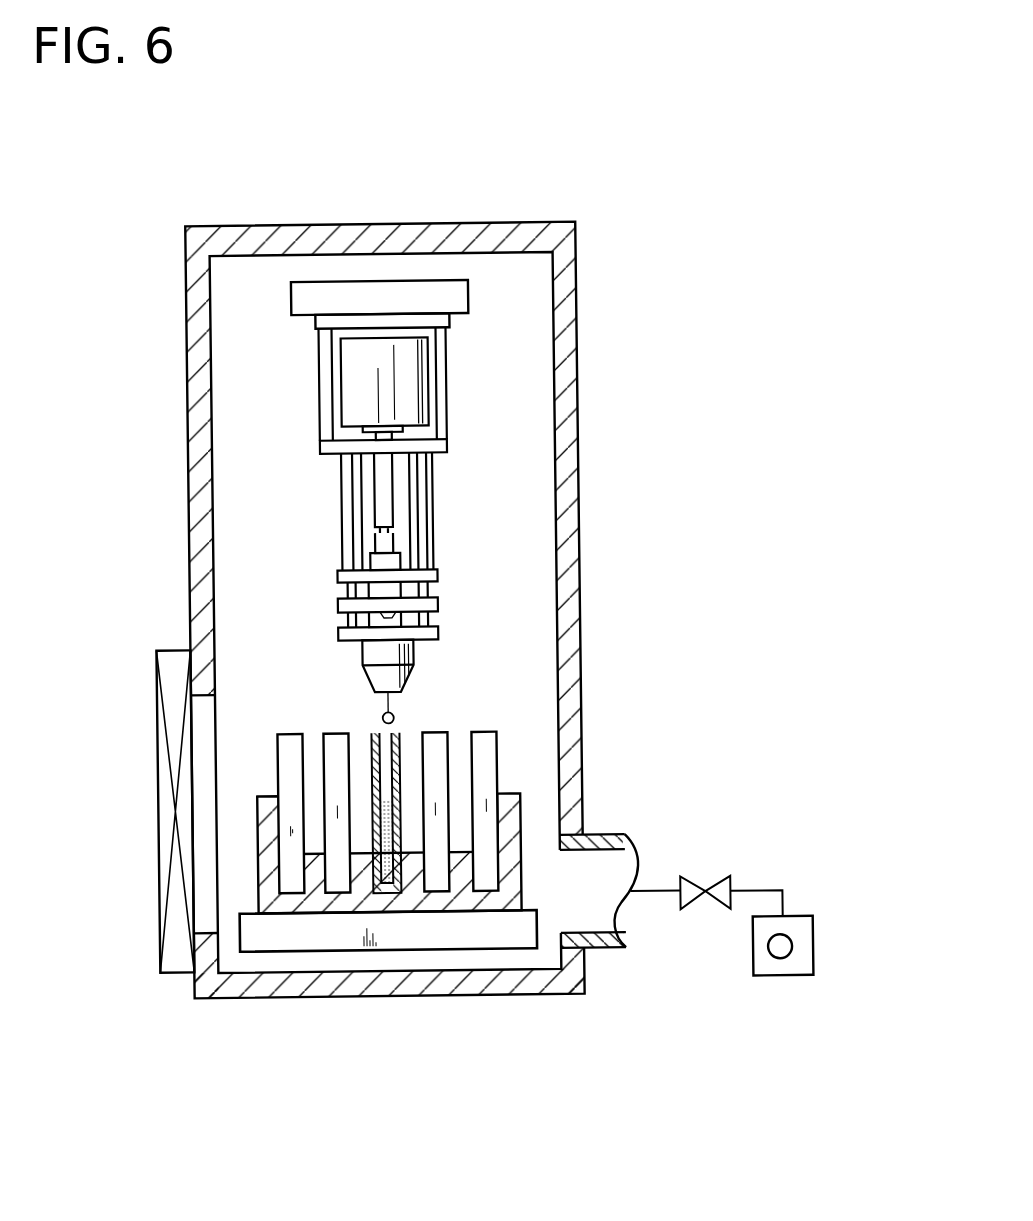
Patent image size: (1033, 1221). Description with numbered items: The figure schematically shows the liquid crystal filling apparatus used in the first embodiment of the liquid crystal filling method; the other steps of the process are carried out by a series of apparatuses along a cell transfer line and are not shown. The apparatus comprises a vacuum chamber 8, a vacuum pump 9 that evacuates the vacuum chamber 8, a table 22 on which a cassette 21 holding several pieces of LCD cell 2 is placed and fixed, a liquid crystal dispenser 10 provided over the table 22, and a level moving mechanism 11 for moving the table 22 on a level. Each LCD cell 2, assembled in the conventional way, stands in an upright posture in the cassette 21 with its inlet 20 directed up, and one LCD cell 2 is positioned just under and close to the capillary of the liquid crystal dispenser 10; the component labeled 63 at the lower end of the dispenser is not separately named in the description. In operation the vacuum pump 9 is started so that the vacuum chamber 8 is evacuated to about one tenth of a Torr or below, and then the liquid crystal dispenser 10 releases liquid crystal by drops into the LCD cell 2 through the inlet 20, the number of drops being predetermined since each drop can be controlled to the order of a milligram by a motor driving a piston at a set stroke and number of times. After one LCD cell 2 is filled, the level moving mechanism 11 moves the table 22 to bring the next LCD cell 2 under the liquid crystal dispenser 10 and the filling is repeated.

The LCD cell 2 is at (285, 745).
The vacuum chamber 8 is at (580, 540).
The vacuum pump 9 is at (809, 942).
The liquid crystal dispenser 10 is at (443, 510).
The level moving mechanism 11 is at (461, 303).
The inlet 20 is at (386, 737).
The cassette 21 is at (413, 900).
The table 22 is at (333, 932).
The probe nozzle 63 is at (392, 700).